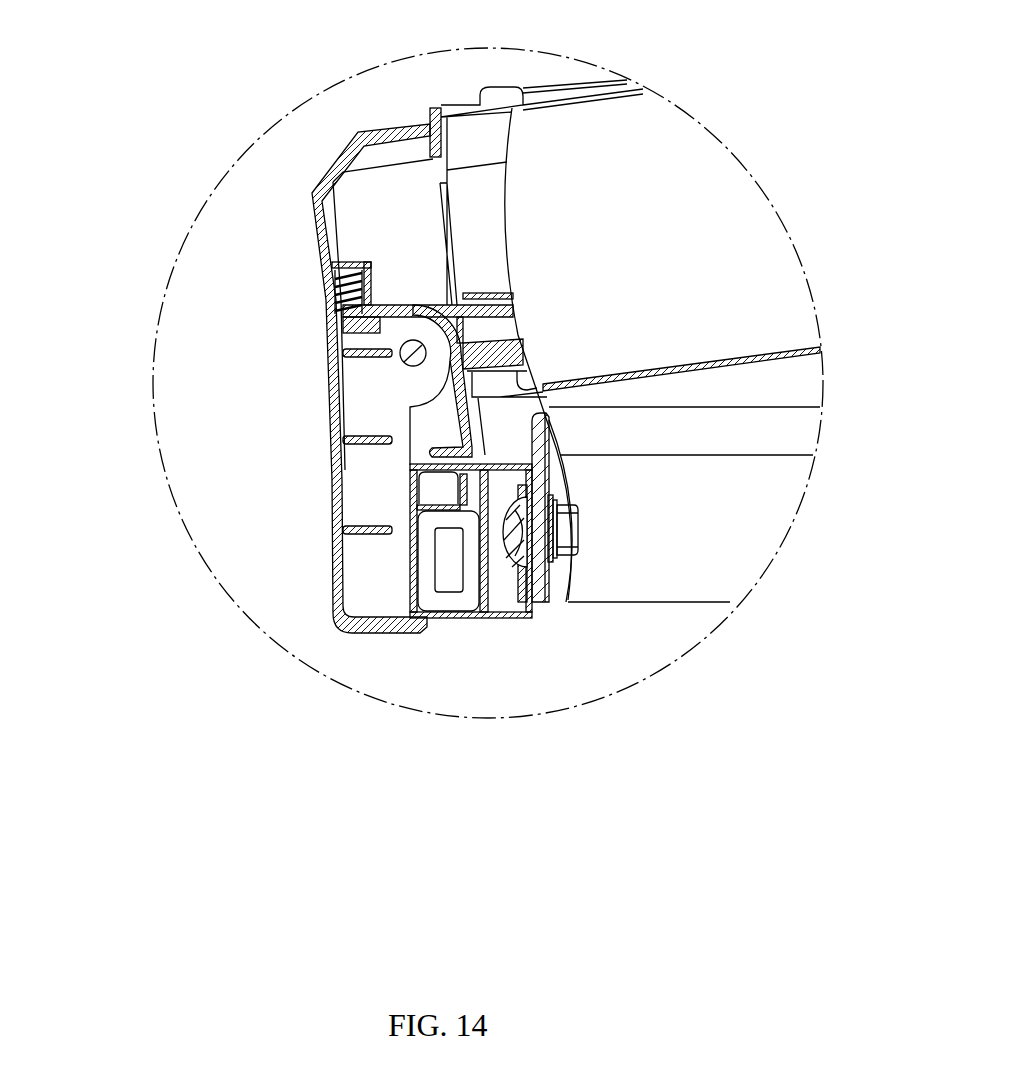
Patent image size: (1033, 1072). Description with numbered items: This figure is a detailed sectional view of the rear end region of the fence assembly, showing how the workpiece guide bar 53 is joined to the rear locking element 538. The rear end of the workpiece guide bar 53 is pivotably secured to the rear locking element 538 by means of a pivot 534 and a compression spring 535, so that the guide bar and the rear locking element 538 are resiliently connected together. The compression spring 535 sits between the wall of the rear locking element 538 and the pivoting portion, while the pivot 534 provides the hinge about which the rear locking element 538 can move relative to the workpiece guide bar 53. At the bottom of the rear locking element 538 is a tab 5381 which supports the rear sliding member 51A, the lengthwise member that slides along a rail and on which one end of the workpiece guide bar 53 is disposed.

The workpiece guide bar 53 is at (657, 180).
The pivot 534 is at (400, 357).
The compression spring 535 is at (332, 290).
The rear locking element 538 is at (337, 538).
The tab 5381 is at (410, 637).
The rear sliding member 51A is at (500, 617).